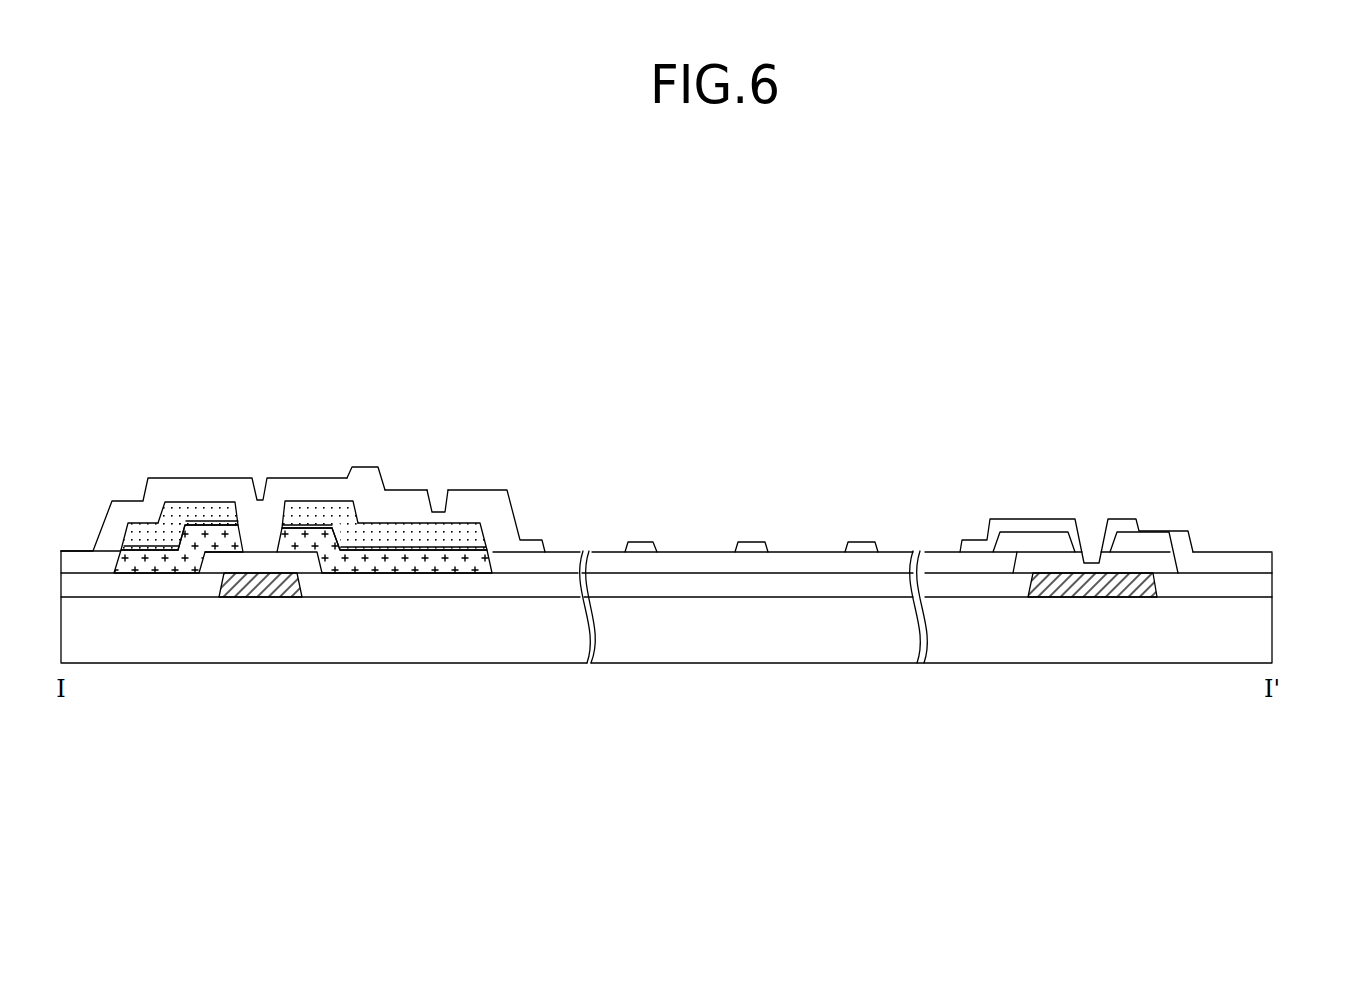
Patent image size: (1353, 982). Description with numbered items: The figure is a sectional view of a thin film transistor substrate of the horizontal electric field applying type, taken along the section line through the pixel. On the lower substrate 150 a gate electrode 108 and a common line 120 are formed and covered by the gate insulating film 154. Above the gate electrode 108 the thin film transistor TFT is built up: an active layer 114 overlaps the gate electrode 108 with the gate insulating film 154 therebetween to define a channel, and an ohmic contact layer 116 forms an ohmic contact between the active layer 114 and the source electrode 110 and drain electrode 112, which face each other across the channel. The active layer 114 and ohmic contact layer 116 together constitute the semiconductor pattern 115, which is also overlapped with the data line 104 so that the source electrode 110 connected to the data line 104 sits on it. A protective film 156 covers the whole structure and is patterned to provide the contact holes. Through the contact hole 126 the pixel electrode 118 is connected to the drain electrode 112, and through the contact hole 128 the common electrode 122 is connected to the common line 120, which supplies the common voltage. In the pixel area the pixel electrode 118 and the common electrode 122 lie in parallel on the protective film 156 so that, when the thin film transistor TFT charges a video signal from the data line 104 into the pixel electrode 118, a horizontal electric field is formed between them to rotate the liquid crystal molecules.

The data line 104 is at (147, 530).
The gate electrode 108 is at (258, 583).
The source electrode 110 is at (200, 512).
The drain electrode 112 is at (312, 512).
The active layer 114 is at (350, 565).
The semiconductor pattern 115 is at (384, 612).
The ohmic contact layer 116 is at (376, 550).
The pixel electrode 118 is at (370, 467).
The common line 120 is at (1094, 585).
The common electrode 122 is at (1028, 523).
The contact hole 126 is at (436, 505).
The contact hole 128 is at (1093, 550).
The lower substrate 150 is at (1273, 631).
The gate insulating film 154 is at (1273, 585).
The protective film 156 is at (1273, 561).
The thin film transistor TFT is at (251, 452).